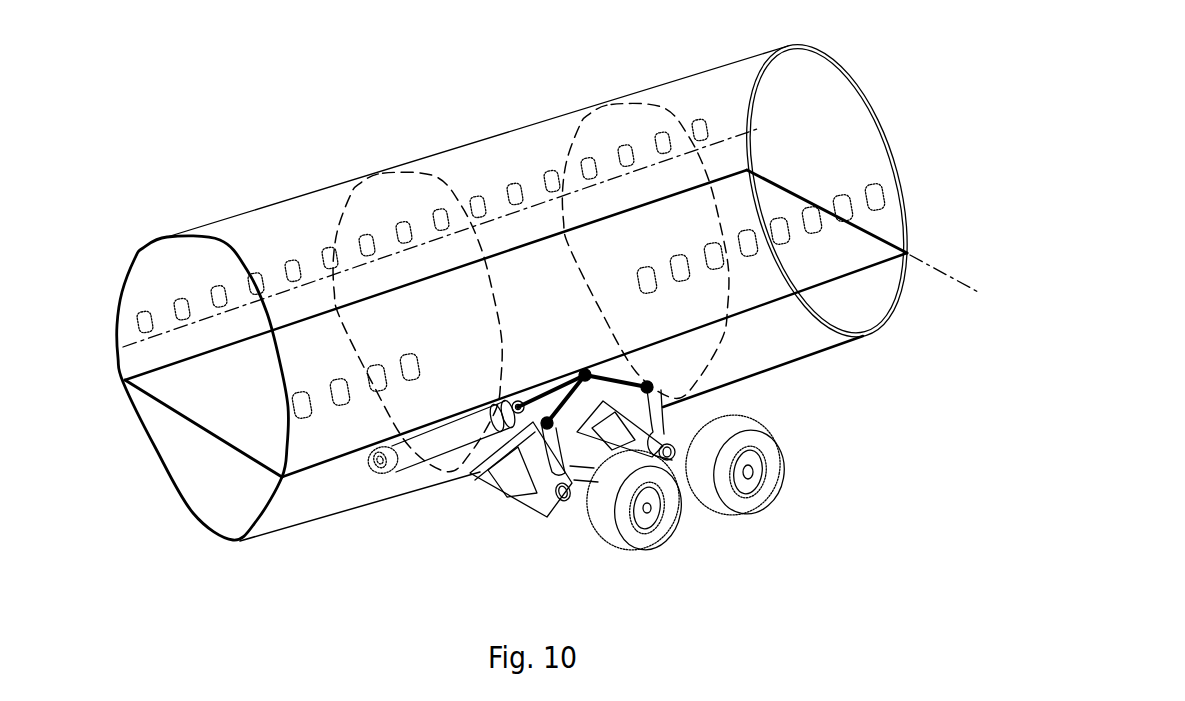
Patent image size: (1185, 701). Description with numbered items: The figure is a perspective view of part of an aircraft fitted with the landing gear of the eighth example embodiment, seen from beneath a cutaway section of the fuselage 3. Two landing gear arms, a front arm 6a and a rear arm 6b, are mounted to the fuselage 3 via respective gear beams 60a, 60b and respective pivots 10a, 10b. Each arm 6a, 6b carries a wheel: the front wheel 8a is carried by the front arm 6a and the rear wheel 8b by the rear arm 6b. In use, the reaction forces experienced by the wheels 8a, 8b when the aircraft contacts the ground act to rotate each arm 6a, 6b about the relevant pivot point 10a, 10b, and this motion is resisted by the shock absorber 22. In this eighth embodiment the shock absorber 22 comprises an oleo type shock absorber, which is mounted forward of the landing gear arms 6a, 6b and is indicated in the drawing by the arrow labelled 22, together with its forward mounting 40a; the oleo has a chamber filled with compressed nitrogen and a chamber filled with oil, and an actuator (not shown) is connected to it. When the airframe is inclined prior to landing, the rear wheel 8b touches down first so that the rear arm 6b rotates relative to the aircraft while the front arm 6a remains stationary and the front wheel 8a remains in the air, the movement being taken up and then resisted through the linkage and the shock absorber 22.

The fuselage 3 is at (815, 107).
The shock absorber 22 is at (368, 474).
The first actuator cylinder 40a is at (420, 448).
The gear beam 60a is at (507, 490).
The pivot point 10a is at (547, 515).
The front arm 6a is at (583, 493).
The front wheel 8a is at (647, 533).
The rear arm 6b is at (677, 457).
The rear wheel 8b is at (768, 480).
The pivot point 10b is at (660, 453).
The gear beam 60b is at (607, 438).